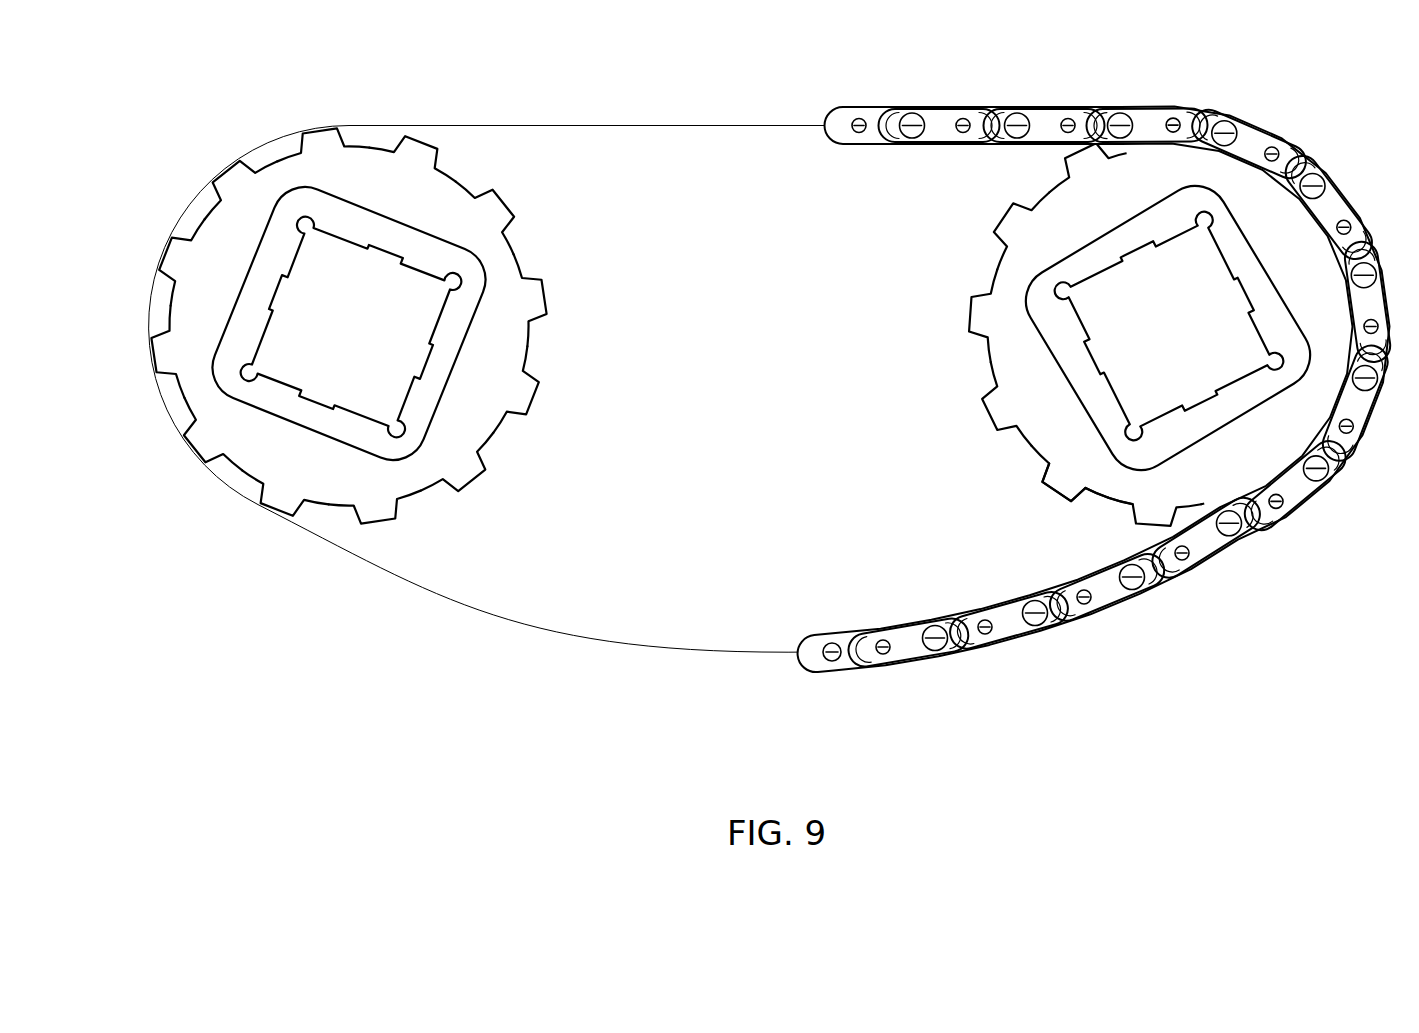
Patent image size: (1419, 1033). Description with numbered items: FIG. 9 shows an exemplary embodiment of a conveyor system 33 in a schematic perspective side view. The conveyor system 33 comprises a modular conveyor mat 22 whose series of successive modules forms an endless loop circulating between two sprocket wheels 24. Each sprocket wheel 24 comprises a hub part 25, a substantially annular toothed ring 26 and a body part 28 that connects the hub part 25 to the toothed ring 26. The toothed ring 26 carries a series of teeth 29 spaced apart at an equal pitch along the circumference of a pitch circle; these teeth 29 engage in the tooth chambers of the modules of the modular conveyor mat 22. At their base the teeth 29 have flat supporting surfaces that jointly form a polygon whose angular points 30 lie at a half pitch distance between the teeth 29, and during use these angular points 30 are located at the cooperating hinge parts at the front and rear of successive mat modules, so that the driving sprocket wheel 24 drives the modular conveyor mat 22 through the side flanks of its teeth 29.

The modular conveyor mat 22 is at (912, 660).
The sprocket wheel 24 is at (1137, 327).
The hub part 25 is at (1090, 369).
The toothed ring 26 is at (1045, 437).
The body part 28 is at (1050, 411).
The teeth 29 is at (1058, 497).
The angular points 30 is at (1112, 500).
The conveyor system 33 is at (1095, 421).